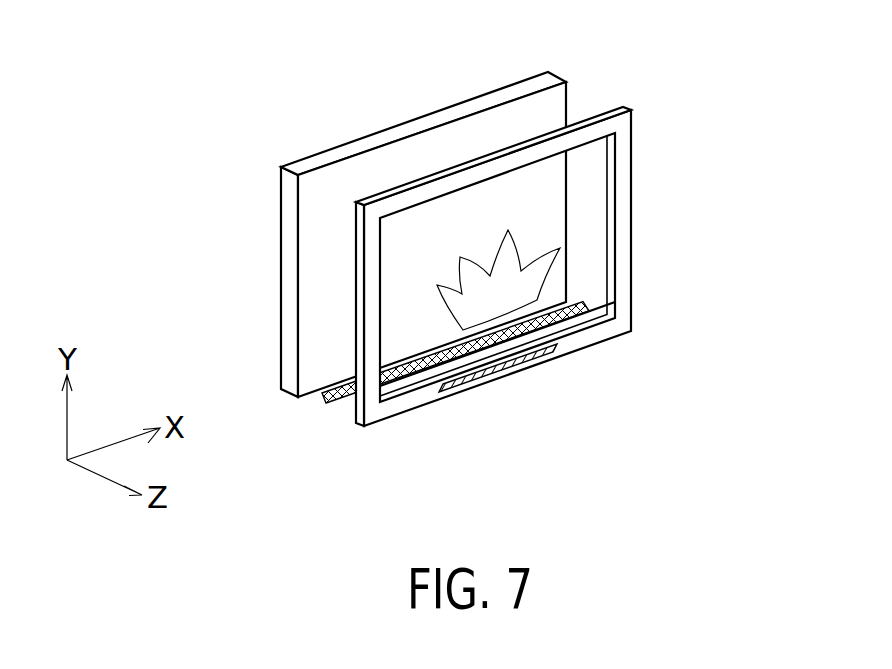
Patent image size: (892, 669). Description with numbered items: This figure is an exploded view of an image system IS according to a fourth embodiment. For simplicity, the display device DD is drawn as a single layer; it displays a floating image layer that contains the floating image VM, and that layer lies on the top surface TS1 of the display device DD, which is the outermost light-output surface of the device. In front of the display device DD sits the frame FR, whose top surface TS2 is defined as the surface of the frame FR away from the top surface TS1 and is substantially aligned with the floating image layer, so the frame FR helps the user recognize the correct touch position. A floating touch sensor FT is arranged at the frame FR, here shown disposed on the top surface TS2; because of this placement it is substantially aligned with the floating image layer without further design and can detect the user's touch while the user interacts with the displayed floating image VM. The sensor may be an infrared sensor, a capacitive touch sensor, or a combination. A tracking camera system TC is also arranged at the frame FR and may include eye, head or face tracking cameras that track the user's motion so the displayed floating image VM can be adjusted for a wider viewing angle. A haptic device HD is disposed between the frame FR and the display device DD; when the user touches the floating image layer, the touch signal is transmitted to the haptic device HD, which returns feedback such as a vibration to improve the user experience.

The image system IS is at (150, 76).
The display device DD is at (568, 97).
The top surface of the display device TS1 is at (333, 178).
The tracking camera system TC is at (508, 152).
The top surface of the frame TS2 is at (590, 340).
The haptic device HD is at (325, 403).
The floating image VM is at (543, 272).
The frame FR is at (638, 137).
The floating touch sensor FT is at (515, 370).